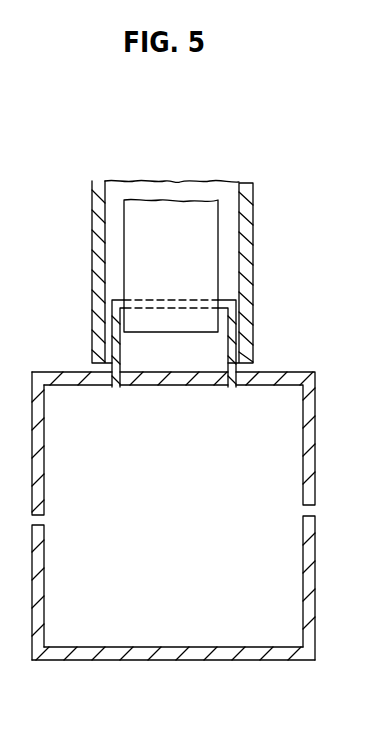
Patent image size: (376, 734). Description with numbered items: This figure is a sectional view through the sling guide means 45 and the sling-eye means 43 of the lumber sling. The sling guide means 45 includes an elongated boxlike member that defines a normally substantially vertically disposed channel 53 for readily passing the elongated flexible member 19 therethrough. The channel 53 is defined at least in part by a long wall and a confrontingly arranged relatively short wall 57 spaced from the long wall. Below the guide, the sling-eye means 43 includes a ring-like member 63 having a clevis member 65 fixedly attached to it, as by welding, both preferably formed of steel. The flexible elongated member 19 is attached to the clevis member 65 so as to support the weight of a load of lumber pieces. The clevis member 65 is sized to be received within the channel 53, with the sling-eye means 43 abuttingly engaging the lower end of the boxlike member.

The elongated flexible member 19 is at (176, 281).
The sling-eye means 43 is at (125, 655).
The sling guide means 45 is at (96, 245).
The channel 53 is at (236, 211).
The short wall 57 is at (170, 188).
The ring-like member 63 is at (37, 470).
The clevis member 65 is at (232, 330).